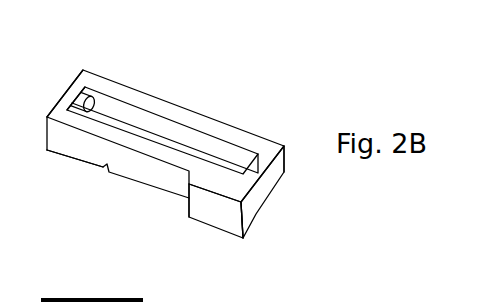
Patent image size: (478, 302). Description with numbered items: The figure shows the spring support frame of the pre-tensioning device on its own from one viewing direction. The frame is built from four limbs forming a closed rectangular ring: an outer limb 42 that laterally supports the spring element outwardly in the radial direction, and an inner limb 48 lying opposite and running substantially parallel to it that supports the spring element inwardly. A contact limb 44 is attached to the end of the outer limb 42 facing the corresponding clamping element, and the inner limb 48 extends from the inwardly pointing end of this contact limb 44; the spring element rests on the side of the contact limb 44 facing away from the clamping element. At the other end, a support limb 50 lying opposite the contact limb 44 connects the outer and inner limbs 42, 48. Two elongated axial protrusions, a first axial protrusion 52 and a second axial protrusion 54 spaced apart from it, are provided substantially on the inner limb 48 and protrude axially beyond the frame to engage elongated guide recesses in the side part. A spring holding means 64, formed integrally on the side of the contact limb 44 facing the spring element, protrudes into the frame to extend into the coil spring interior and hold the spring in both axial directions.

The outer limb 42 is at (186, 110).
The contact limb 44 is at (67, 93).
The spring holding means 64 is at (98, 108).
The support limb 50 is at (262, 173).
The first axial protrusion 52 is at (217, 218).
The inner limb 48 is at (158, 175).
The second axial protrusion 54 is at (82, 156).